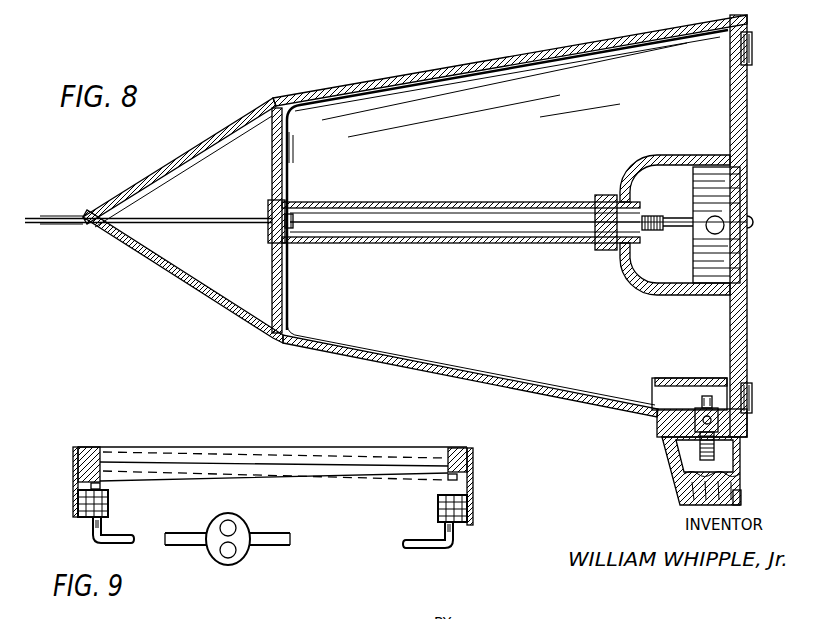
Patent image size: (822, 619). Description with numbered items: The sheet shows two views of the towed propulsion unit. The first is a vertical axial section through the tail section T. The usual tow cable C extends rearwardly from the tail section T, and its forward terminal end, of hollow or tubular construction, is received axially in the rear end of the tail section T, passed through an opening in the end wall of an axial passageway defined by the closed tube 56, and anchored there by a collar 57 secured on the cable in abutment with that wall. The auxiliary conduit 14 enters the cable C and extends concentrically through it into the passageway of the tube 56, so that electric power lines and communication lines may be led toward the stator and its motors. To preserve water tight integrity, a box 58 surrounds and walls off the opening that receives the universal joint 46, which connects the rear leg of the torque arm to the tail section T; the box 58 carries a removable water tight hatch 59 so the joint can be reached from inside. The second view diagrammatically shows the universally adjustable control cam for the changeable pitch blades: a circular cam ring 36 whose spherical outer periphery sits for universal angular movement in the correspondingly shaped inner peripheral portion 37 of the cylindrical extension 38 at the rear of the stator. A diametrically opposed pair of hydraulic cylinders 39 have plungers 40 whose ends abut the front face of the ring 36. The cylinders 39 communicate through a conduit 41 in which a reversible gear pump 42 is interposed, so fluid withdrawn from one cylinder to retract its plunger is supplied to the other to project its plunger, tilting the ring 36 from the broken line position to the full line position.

In FIG. 8, the tail section T is at (531, 52).
In FIG. 8, the tow cable C is at (204, 218).
In FIG. 8, the auxiliary conduit 14 is at (350, 226).
In FIG. 8, the collar 57 is at (296, 205).
In FIG. 8, the closed tube 56 is at (553, 203).
In FIG. 8, the box 58 is at (652, 395).
In FIG. 8, the removable water tight hatch 59 is at (675, 378).
In FIG. 8, the universal joint 46 is at (722, 406).
In FIG. 9, the cam ring 36 is at (257, 463).
In FIG. 9, the inner peripheral portion 37 is at (98, 448).
In FIG. 9, the cylindrical extension 38 is at (73, 469).
In FIG. 9, the hydraulic cylinder 39 is at (110, 505).
In FIG. 9, the plunger 40 is at (106, 488).
In FIG. 9, the conduit 41 is at (410, 549).
In FIG. 9, the gear pump 42 is at (248, 527).